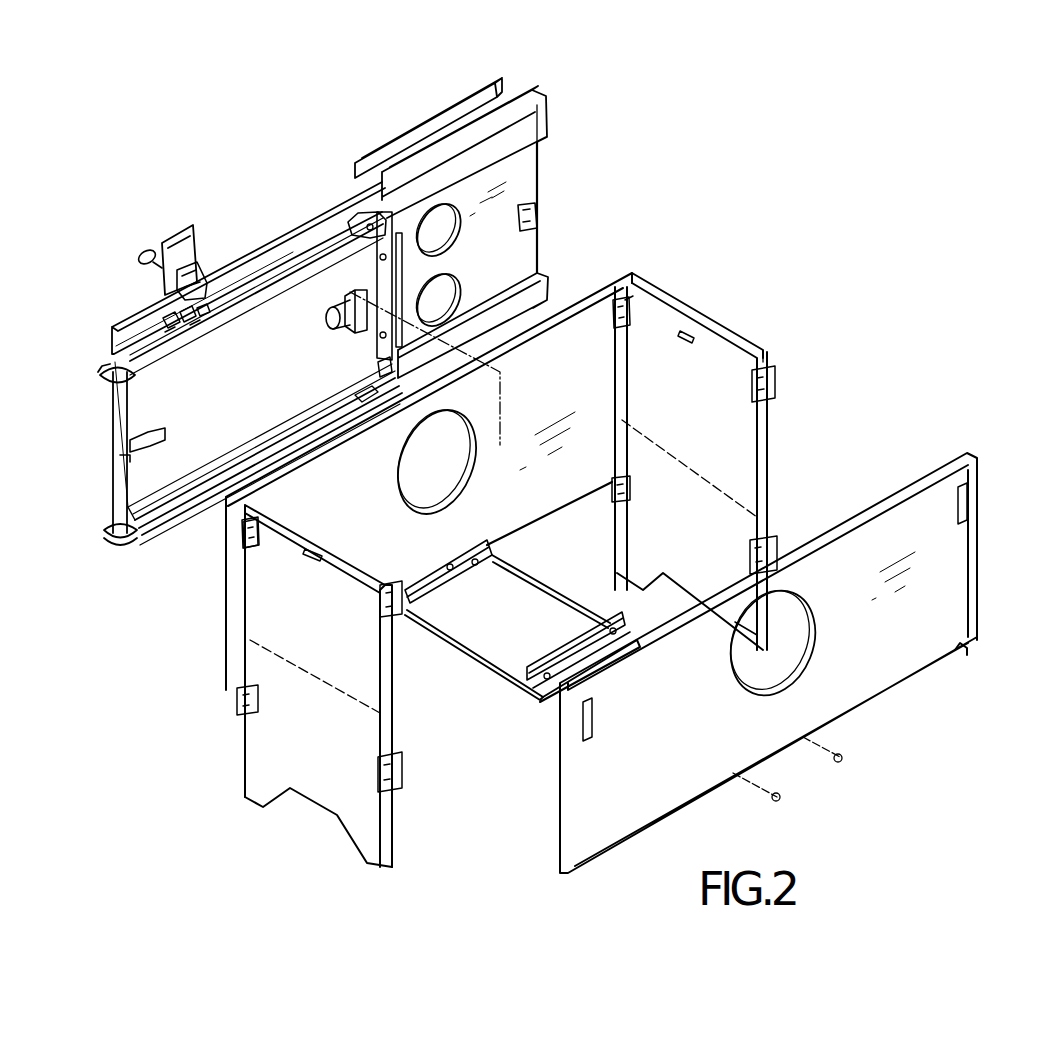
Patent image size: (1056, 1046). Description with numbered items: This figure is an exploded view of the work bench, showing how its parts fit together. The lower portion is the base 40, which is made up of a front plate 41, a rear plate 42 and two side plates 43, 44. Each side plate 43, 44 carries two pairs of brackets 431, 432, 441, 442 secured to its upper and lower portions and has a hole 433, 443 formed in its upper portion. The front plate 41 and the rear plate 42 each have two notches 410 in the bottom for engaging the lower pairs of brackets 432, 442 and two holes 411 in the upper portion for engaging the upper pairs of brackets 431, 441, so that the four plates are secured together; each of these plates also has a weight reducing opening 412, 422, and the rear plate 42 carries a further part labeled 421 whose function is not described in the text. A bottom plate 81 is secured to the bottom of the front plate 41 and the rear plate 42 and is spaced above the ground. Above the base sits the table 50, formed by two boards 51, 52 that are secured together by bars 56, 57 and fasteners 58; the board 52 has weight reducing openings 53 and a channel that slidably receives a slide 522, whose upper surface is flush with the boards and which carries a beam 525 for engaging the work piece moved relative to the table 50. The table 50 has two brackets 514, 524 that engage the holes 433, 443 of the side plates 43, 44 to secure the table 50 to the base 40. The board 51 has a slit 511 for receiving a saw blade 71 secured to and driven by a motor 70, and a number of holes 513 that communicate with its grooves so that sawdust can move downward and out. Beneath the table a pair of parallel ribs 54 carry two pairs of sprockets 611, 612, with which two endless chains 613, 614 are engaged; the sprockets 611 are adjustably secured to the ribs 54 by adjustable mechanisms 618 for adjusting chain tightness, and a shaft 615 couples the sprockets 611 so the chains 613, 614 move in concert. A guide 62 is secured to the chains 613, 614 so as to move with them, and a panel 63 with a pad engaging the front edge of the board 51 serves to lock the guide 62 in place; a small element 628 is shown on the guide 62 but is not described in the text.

The base 40 is at (785, 454).
The front plate 41 is at (990, 551).
The notch 410 is at (960, 687).
The hole 411 is at (650, 275).
The weight reducing opening 412 is at (822, 643).
The rear plate 42 is at (588, 314).
The bracket 421 is at (592, 365).
The weight reducing opening 422 is at (484, 492).
The side plate 43 is at (245, 786).
The bracket 431 is at (262, 548).
The bracket 432 is at (228, 736).
The hole 433 is at (310, 585).
The side plate 44 is at (738, 334).
The bracket 441 is at (786, 380).
The bracket 442 is at (790, 530).
The hole 443 is at (704, 310).
The table 50 is at (547, 159).
The board 51 is at (110, 436).
The slit 511 is at (308, 342).
The hole 513 is at (310, 243).
The bracket 514 is at (160, 455).
The board 52 is at (540, 190).
The slide 522 is at (518, 70).
The bracket 524 is at (556, 212).
The beam 525 is at (433, 120).
The weight reducing opening 53 is at (475, 247).
The rib 54 is at (248, 436).
The bar 56 is at (373, 365).
The bar 57 is at (403, 266).
The fastener 58 is at (388, 210).
The guide 62 is at (204, 198).
The panel 63 is at (214, 250).
The sprocket 611 is at (78, 390).
The sprocket 612 is at (358, 214).
The endless chain 613 is at (84, 418).
The endless chain 614 is at (120, 590).
The shaft 615 is at (78, 478).
The adjustable mechanism 618 is at (128, 290).
The lever 628 is at (162, 220).
The motor 70 is at (307, 362).
The saw blade 71 is at (355, 284).
The bottom plate 81 is at (570, 585).